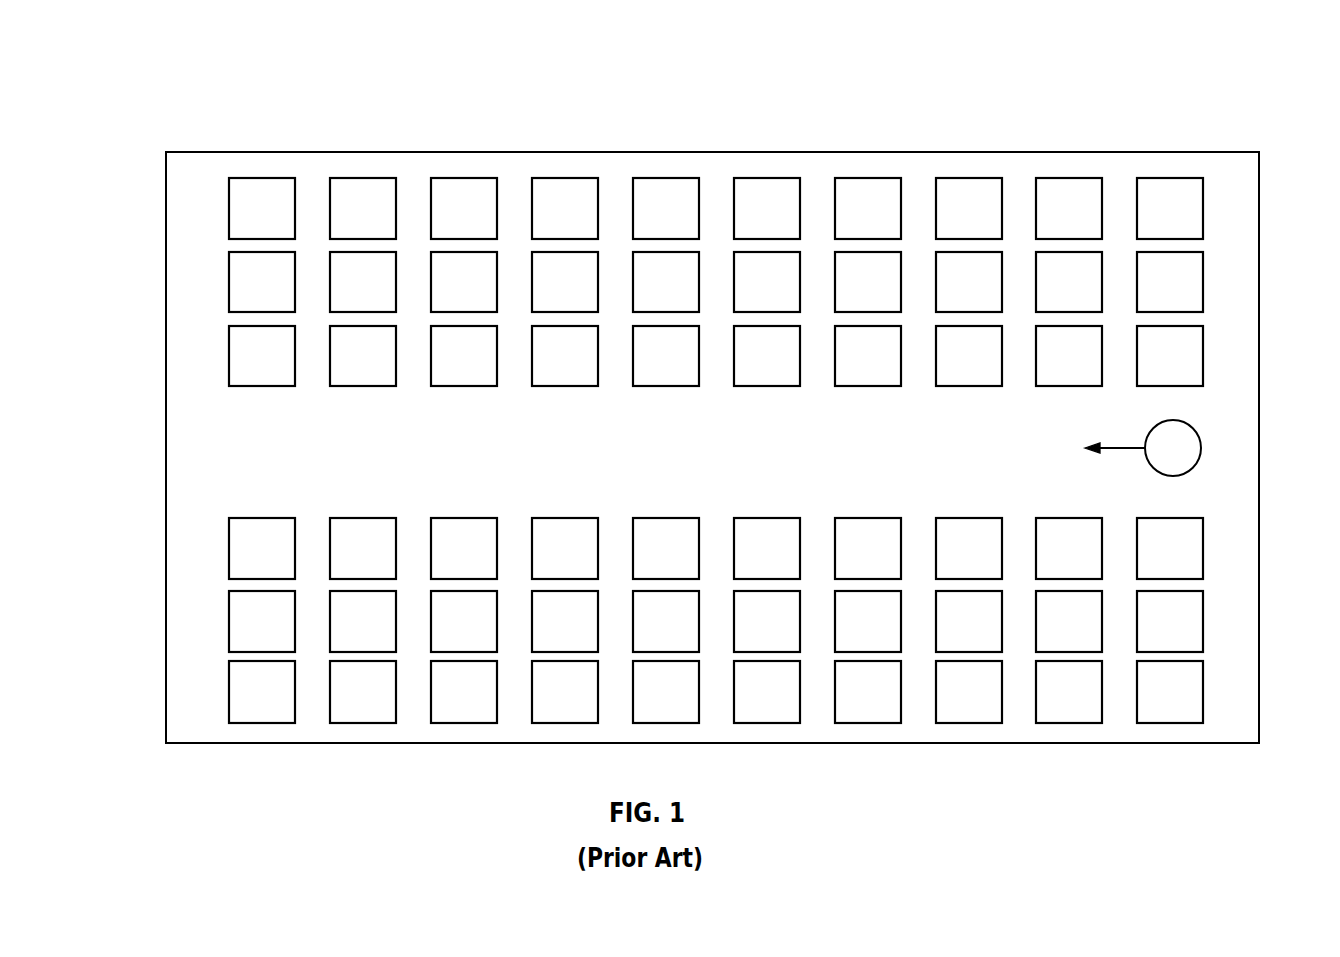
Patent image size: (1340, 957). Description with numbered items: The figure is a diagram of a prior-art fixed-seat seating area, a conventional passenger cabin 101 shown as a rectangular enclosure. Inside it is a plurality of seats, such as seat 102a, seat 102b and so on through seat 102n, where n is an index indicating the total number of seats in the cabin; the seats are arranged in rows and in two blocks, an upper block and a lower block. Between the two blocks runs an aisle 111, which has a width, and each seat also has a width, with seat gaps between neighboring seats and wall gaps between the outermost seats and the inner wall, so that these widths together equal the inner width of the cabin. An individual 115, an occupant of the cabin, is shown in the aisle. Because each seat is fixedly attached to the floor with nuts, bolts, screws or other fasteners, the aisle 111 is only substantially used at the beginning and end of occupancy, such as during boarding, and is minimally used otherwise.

The prior art plate / carrier 101 is at (1128, 110).
The seat 102a is at (262, 208).
The seat 102b is at (262, 282).
The seat 102n is at (1170, 692).
The aisle 111 is at (232, 447).
The individual 115 is at (1188, 474).